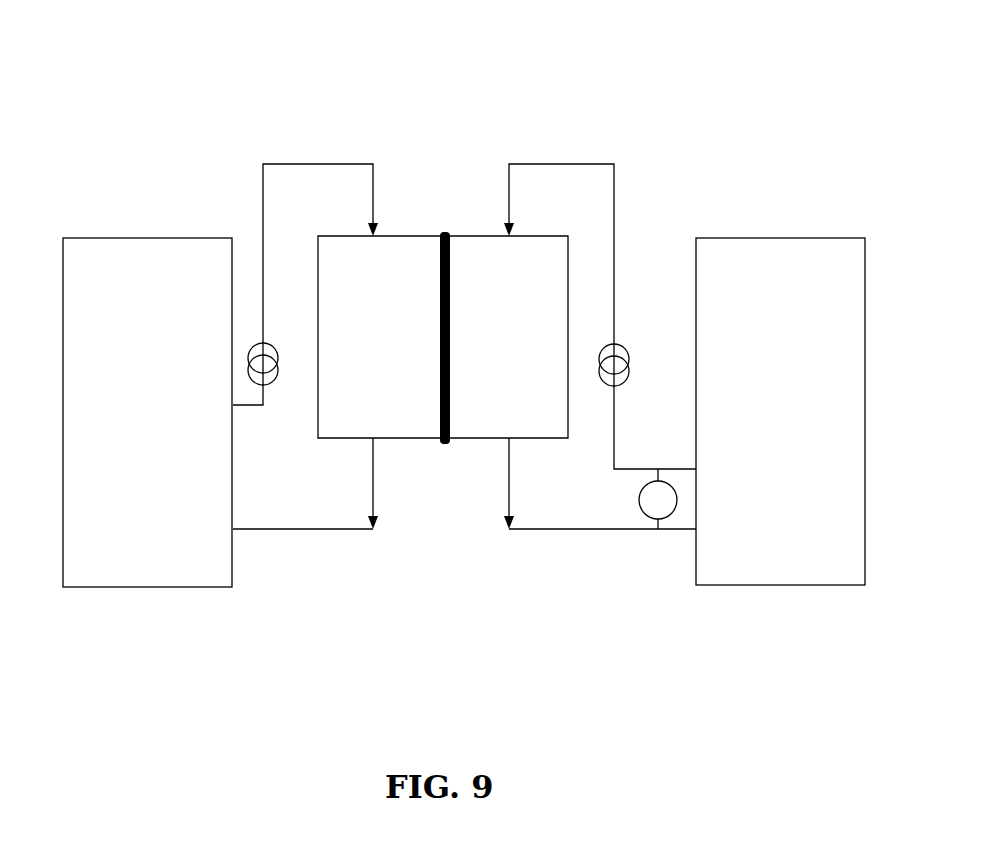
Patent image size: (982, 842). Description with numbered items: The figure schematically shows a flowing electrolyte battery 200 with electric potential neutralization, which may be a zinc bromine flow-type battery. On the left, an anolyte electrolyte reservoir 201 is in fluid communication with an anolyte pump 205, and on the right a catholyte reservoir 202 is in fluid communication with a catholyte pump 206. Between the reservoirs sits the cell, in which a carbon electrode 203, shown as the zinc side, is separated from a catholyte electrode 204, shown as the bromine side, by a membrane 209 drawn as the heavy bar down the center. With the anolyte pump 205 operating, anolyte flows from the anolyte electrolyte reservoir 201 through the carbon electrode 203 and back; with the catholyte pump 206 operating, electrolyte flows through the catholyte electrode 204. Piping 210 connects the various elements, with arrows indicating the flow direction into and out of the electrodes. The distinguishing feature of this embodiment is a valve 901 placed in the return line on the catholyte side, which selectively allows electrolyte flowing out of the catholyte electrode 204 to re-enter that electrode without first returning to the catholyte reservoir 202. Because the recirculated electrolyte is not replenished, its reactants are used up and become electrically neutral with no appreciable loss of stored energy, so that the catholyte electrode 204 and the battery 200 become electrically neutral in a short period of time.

The flowing electrolyte battery 200 is at (368, 76).
The anolyte electrolyte reservoir 201 is at (124, 512).
The catholyte reservoir 202 is at (768, 513).
The carbon electrode 203 is at (348, 407).
The catholyte electrode 204 is at (476, 407).
The anolyte pump 205 is at (277, 371).
The catholyte pump 206 is at (601, 385).
The membrane 209 is at (443, 443).
The piping 210 is at (250, 218).
The valve 901 is at (643, 512).